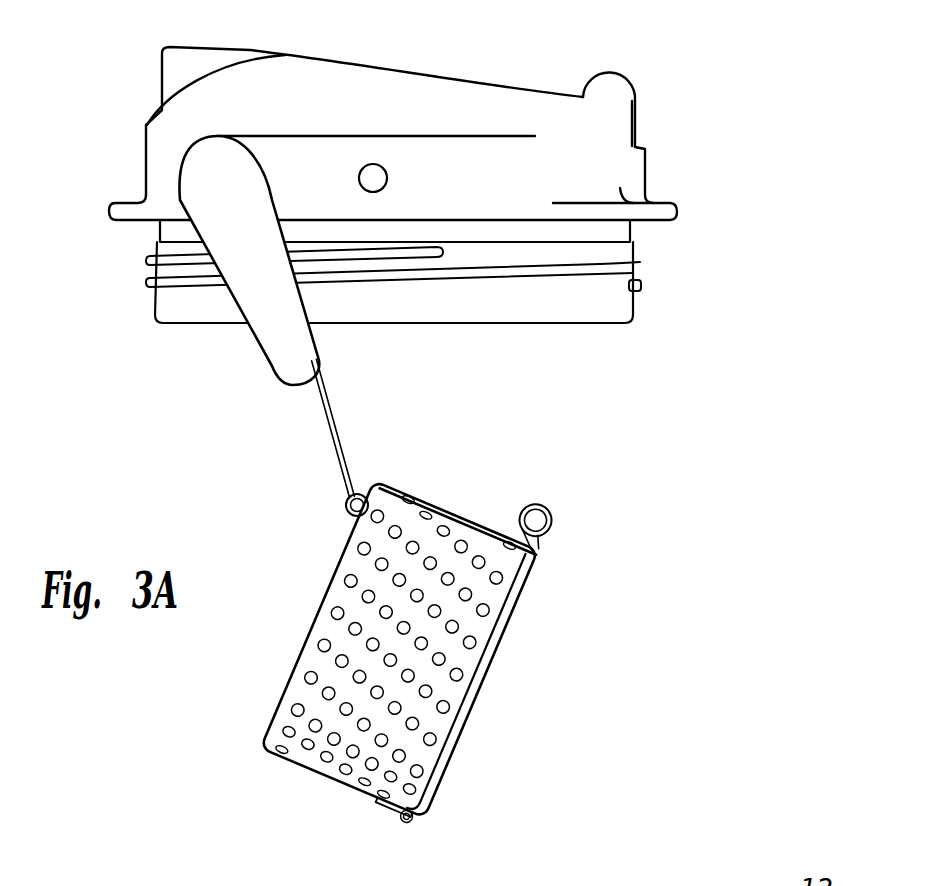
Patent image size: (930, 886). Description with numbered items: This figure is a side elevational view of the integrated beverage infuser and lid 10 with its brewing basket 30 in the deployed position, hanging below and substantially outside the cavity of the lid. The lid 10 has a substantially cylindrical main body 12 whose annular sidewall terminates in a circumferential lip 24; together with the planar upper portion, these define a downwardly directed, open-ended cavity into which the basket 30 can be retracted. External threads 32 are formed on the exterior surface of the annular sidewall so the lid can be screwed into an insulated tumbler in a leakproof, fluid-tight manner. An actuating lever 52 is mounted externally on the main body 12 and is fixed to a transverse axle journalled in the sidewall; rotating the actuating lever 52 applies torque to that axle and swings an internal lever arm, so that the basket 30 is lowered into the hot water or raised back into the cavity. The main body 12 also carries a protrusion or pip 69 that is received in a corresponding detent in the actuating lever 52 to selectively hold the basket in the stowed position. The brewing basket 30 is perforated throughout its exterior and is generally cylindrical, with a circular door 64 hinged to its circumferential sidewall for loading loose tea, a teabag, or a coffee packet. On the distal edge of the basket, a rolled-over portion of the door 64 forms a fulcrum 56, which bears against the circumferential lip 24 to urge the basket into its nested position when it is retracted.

The lid 10 is at (722, 40).
The main body 12 is at (646, 183).
The circumferential lip 24 is at (610, 324).
The brewing basket 30 is at (419, 613).
The external threads 32 is at (640, 262).
The actuating lever 52 is at (290, 387).
The fulcrum 56 is at (555, 521).
The circular door 64 is at (500, 671).
The pip 69 is at (372, 164).